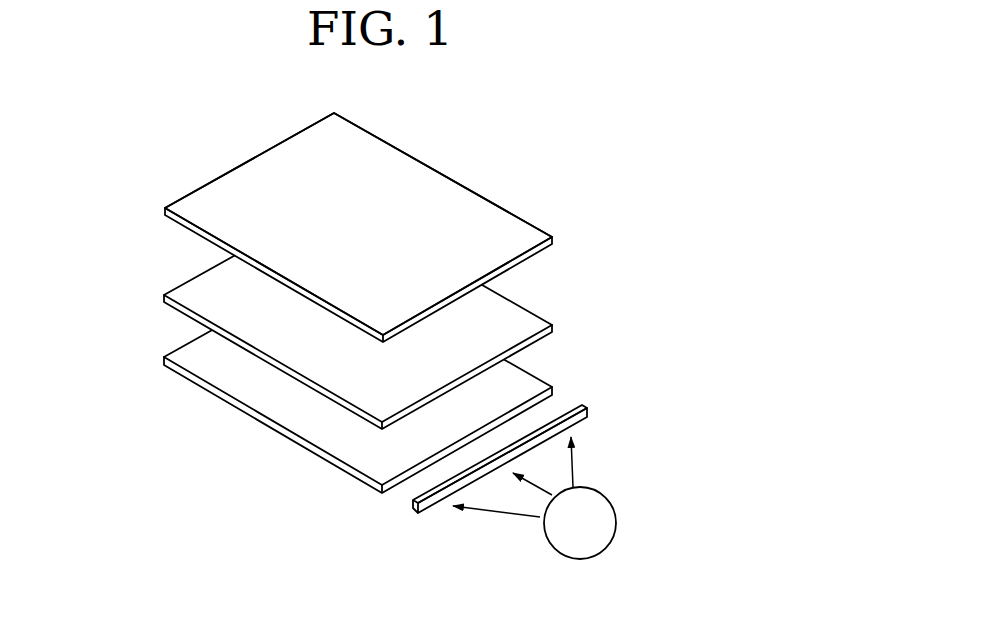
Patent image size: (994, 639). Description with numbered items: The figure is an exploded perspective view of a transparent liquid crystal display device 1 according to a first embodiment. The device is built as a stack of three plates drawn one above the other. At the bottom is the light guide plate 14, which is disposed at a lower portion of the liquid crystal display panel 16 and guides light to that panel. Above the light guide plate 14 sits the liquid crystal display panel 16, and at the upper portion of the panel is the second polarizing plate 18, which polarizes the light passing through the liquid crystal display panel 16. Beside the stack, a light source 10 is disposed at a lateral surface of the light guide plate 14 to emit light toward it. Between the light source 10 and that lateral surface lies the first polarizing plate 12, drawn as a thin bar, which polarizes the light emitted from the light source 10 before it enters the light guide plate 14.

The transparent display device 1 is at (485, 175).
The light source 10 is at (616, 517).
The first polarizing plate 12 is at (588, 407).
The light guide plate 14 is at (187, 353).
The liquid crystal display panel 16 is at (187, 288).
The second polarizing plate 18 is at (187, 202).